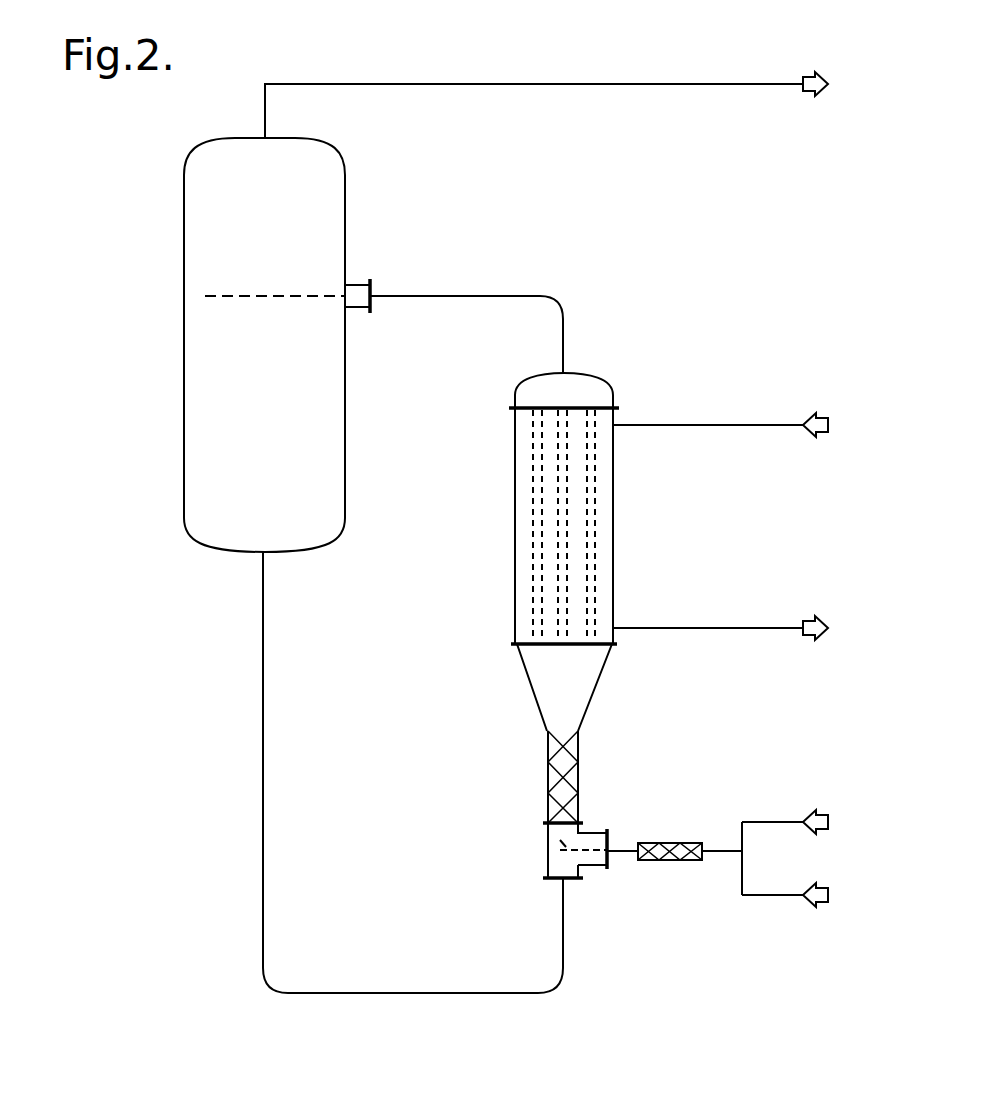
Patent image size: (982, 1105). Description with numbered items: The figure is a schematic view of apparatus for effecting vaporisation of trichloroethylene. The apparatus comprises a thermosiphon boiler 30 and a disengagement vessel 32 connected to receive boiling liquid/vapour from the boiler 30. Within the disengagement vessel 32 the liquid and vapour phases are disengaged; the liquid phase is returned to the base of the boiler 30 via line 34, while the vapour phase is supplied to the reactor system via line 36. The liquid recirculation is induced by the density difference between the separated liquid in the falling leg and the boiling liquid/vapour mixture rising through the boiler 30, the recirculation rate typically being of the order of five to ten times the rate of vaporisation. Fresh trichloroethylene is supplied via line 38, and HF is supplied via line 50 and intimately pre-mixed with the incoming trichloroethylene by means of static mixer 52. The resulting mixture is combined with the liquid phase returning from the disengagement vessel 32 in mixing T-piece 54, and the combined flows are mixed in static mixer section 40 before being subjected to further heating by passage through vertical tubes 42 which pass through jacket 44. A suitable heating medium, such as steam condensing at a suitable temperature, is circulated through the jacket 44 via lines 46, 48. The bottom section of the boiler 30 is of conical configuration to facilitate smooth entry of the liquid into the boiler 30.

The thermosiphon boiler 30 is at (570, 552).
The disengagement vessel 32 is at (345, 398).
The line 34 is at (263, 658).
The line 36 is at (477, 84).
The line 38 is at (767, 895).
The static mixer section 40 is at (548, 784).
The vertical tubes 42 is at (558, 518).
The jacket 44 is at (613, 488).
The line 46 is at (717, 425).
The line 48 is at (728, 628).
The line 50 is at (767, 822).
The static mixer 52 is at (668, 862).
The mixing T-piece 54 is at (548, 852).